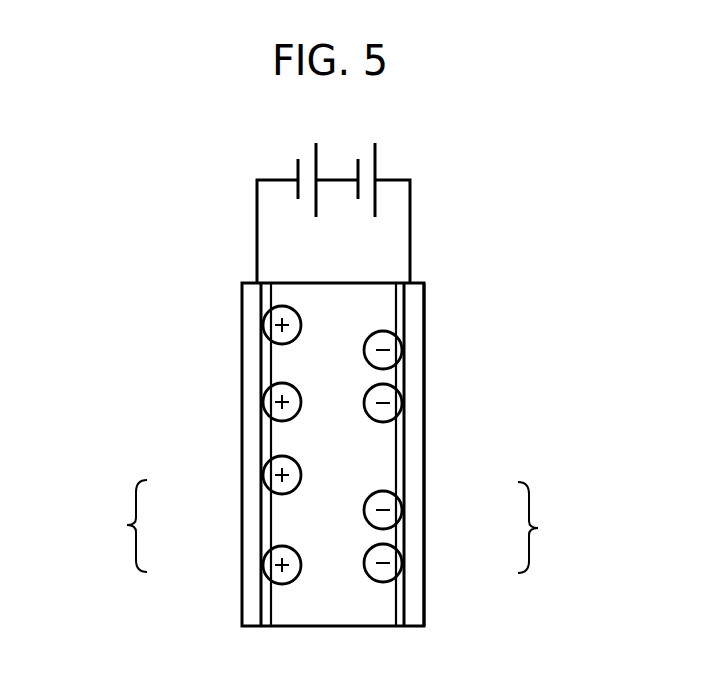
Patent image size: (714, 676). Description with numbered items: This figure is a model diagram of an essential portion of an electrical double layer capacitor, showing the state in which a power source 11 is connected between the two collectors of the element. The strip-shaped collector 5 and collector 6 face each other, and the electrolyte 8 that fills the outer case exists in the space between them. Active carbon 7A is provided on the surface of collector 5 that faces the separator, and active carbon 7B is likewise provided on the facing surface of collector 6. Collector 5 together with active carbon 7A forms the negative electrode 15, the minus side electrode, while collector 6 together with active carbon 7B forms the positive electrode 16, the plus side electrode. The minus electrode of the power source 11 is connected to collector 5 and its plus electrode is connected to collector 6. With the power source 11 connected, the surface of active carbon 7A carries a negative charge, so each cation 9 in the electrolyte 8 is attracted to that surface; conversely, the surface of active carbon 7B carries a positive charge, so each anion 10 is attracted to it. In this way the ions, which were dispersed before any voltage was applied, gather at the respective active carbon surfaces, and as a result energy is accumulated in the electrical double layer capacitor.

The collector 5 is at (252, 597).
The collector 6 is at (415, 575).
The active carbon 7A is at (265, 525).
The active carbon 7B is at (401, 534).
The electrolyte 8 is at (388, 437).
The cation 9 is at (267, 386).
The anion 10 is at (393, 397).
The power source 11 is at (395, 162).
The negative electrode 15 is at (107, 526).
The positive electrode 16 is at (564, 527).